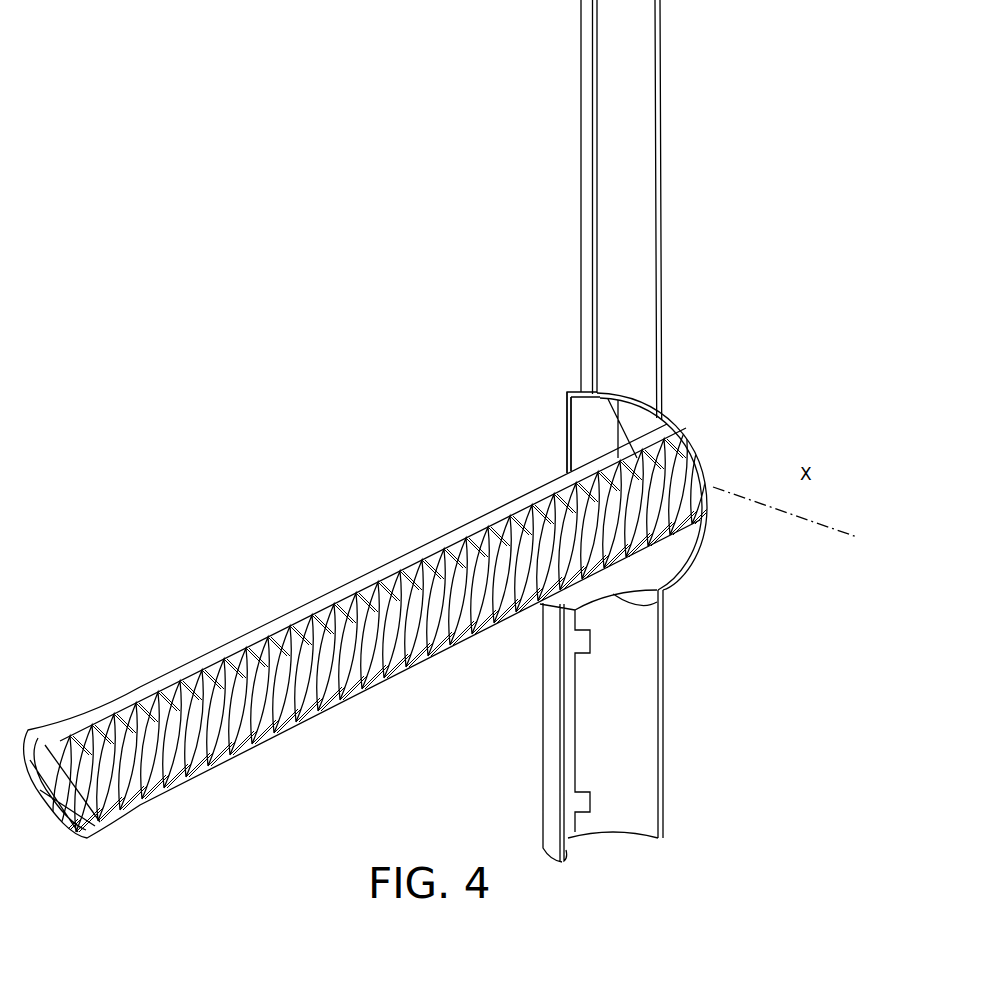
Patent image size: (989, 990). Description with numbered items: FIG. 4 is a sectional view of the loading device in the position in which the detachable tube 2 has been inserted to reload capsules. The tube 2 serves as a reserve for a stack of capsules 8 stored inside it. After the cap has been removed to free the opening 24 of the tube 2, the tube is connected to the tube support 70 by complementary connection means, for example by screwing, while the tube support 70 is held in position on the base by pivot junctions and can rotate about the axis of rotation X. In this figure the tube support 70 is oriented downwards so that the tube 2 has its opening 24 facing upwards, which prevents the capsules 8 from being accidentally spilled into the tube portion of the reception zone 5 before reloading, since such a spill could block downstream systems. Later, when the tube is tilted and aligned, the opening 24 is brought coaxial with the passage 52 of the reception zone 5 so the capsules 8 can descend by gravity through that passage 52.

The detachable tube 2 is at (124, 817).
The capsules 8 is at (243, 670).
The tube support 70 is at (566, 466).
The opening of the tube 24 is at (682, 452).
The passage of the reception zone 52 is at (664, 600).
The reception zone 5 is at (548, 726).